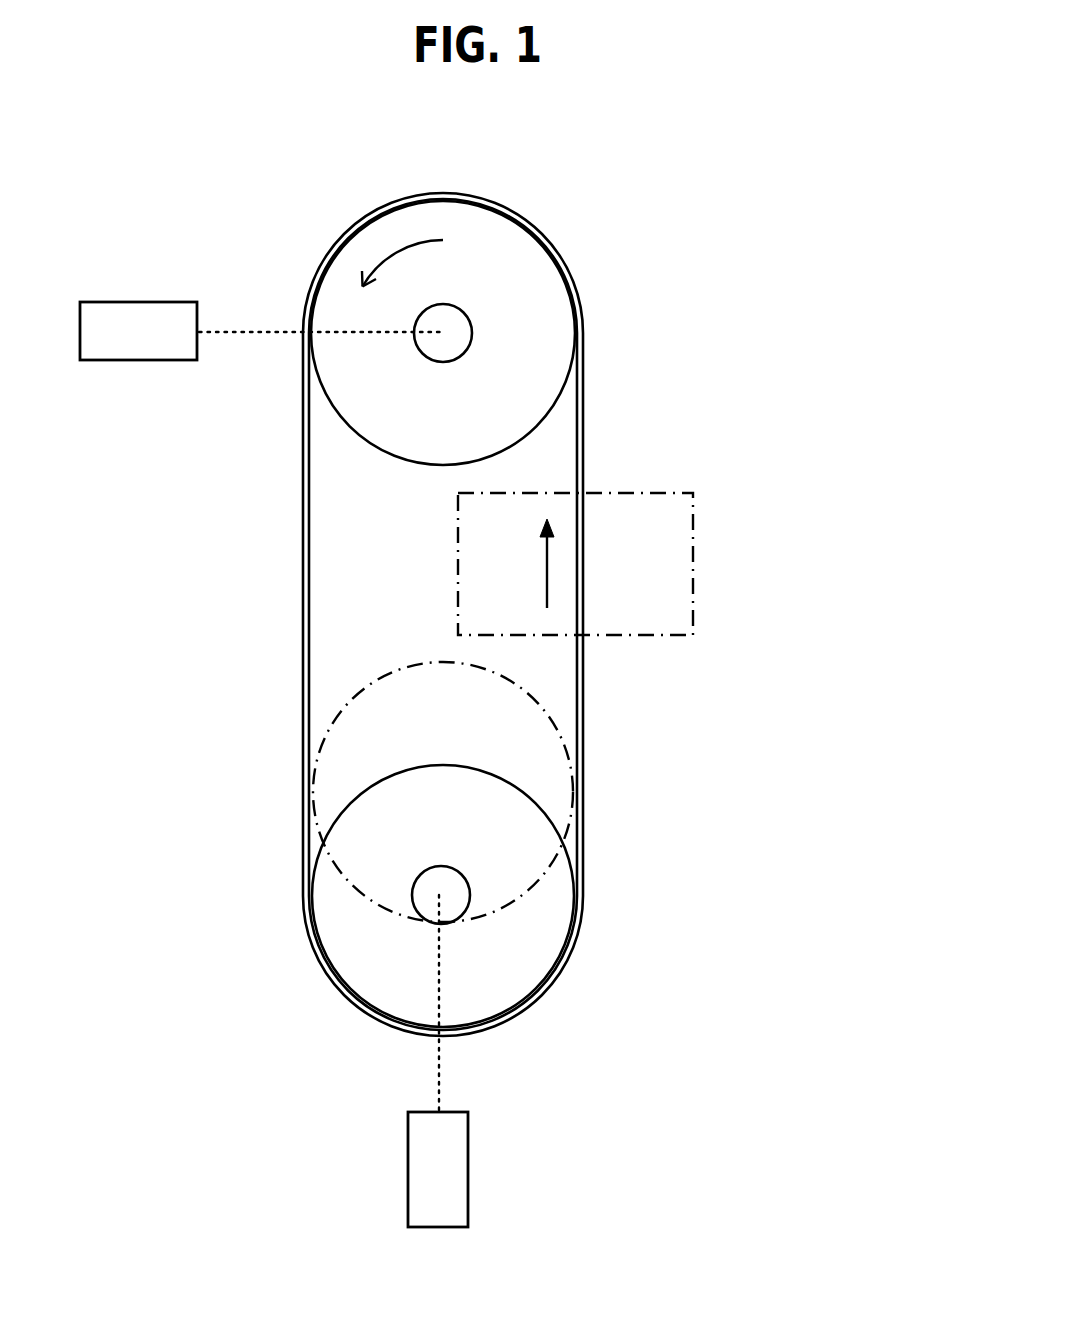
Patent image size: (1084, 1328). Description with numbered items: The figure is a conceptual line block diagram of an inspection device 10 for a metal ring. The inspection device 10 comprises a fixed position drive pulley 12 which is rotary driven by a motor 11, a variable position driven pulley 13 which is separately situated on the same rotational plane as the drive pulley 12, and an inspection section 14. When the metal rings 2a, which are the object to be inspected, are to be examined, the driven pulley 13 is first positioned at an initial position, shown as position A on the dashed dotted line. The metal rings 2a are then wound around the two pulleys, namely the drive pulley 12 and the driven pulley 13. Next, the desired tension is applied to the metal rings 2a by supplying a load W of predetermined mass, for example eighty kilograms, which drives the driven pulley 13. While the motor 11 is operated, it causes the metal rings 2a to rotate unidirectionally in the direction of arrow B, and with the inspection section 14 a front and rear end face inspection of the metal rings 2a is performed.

The inspection device 10 is at (664, 273).
The motor 11 is at (137, 302).
The drive pulley 12 is at (490, 247).
The driven pulley 13 is at (513, 987).
The inspection section 14 is at (740, 497).
The metal rings 2a is at (582, 702).
The initial position A is at (410, 665).
The direction of rotation arrow B is at (547, 557).
The load W is at (468, 1162).